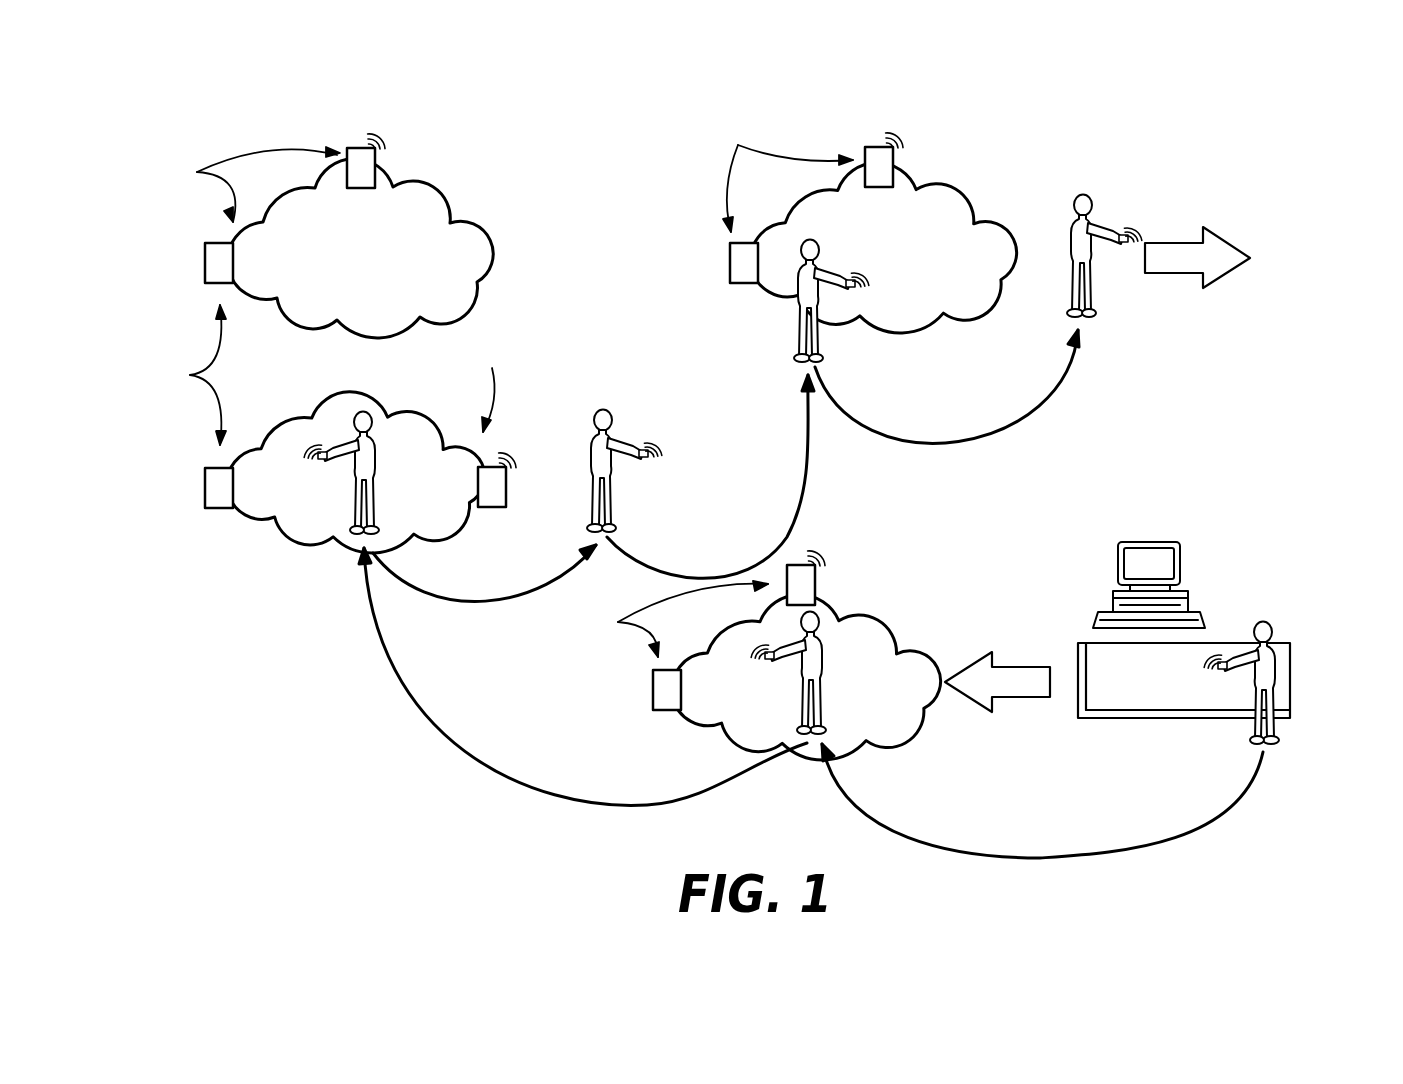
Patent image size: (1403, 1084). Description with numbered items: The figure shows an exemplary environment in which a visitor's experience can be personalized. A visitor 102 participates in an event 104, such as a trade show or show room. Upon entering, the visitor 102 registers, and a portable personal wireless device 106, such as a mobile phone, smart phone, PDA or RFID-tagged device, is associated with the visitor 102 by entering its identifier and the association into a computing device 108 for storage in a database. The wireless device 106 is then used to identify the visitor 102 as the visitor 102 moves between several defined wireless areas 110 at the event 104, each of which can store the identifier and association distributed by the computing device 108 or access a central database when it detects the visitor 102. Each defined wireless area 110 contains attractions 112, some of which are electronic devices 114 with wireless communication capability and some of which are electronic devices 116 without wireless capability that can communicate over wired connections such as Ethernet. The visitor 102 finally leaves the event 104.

The visitor 102 is at (373, 418).
The event 104 is at (1210, 165).
The portable personal wireless device 106 is at (330, 452).
The computing device 108 is at (1150, 542).
The defined wireless area 110 is at (440, 192).
The attraction 112 is at (500, 385).
The electronic device with wireless communication capability 114 is at (360, 148).
The electronic device without wireless communication capability 116 is at (205, 260).